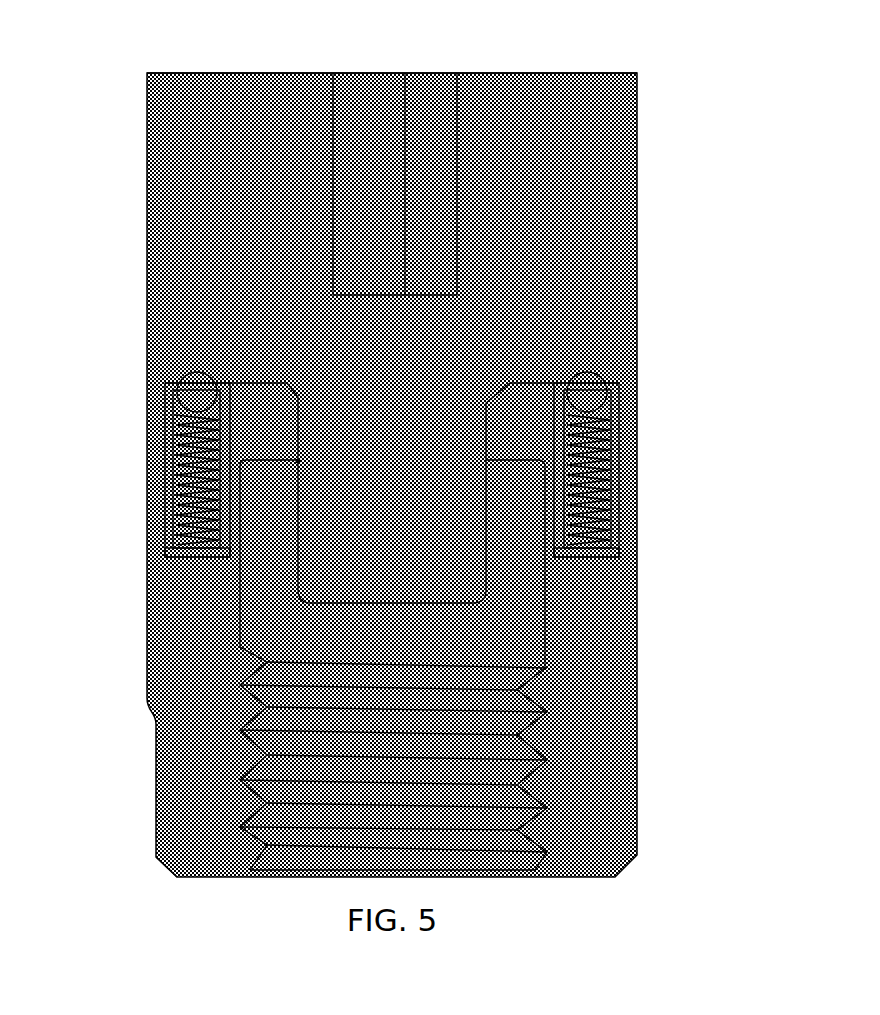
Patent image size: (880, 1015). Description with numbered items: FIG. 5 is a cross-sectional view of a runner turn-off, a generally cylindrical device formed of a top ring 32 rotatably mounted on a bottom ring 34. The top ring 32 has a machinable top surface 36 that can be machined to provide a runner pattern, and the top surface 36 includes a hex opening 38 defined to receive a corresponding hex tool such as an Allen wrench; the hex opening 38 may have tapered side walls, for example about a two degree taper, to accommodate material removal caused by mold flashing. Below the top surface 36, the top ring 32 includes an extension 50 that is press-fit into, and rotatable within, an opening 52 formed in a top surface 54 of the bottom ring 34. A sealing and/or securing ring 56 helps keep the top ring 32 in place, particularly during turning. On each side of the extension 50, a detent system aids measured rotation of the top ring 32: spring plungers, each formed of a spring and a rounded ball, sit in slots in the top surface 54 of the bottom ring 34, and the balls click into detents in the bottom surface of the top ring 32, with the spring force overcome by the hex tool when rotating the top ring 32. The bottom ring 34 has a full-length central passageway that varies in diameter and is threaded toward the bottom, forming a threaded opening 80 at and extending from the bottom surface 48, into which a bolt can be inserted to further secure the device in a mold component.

The top ring 32 is at (618, 198).
The bottom ring 34 is at (622, 730).
The top surface 36 is at (597, 73).
The hex opening 38 is at (425, 73).
The bottom surface 48 is at (193, 880).
The extension 50 is at (453, 585).
The opening 52 is at (298, 395).
The top surface 54 is at (535, 378).
The sealing and/or securing ring 56 is at (298, 463).
The threaded opening 80 is at (265, 878).